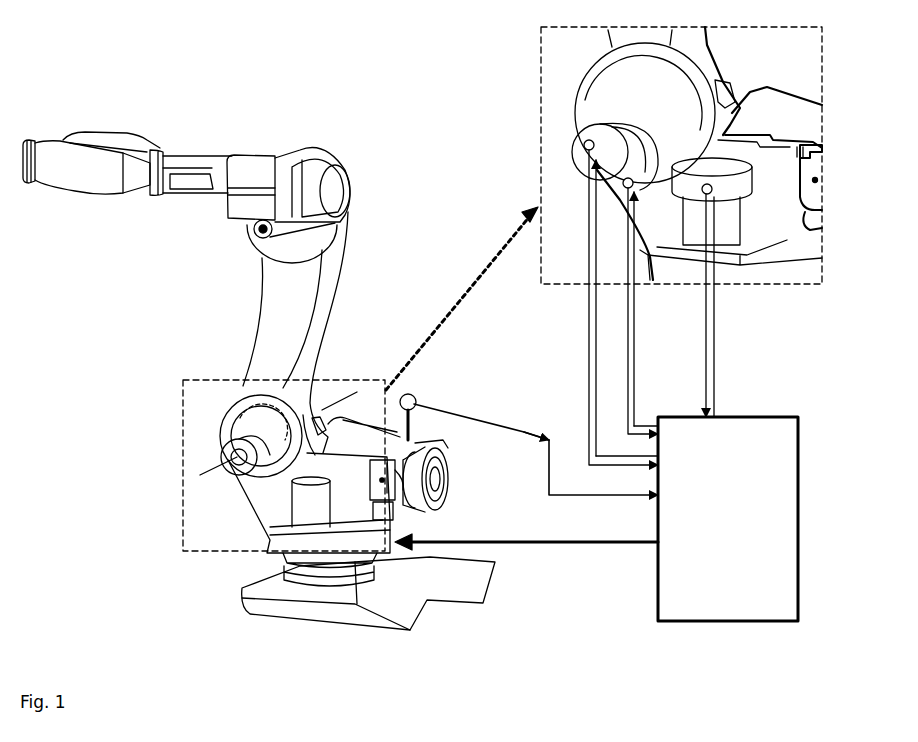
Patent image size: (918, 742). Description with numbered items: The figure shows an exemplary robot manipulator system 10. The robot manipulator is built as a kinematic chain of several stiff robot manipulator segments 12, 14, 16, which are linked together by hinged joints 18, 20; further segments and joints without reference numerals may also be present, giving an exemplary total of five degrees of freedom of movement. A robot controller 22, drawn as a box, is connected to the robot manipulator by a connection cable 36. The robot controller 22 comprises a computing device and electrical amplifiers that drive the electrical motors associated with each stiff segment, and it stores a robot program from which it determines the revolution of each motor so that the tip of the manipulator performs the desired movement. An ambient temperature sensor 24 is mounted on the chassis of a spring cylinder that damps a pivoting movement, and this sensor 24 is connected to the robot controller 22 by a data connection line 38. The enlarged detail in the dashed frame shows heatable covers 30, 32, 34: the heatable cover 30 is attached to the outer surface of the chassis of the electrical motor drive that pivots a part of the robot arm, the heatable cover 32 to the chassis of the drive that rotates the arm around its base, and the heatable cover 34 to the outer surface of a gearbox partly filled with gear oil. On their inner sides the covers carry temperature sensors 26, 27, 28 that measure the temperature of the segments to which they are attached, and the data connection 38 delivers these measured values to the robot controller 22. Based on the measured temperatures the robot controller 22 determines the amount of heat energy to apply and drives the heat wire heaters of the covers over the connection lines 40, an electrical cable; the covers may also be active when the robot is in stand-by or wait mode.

The robot manipulator system 10 is at (856, 635).
The stiff robot manipulator segment 12 is at (278, 497).
The stiff robot manipulator segment 14 is at (285, 288).
The stiff robot manipulator segment 16 is at (228, 192).
The hinged joint 18 is at (260, 433).
The hinged joint 20 is at (254, 233).
The robot controller 22 is at (676, 603).
The ambient temperature sensor 24 is at (415, 395).
The temperature sensor 26 is at (580, 144).
The temperature sensor 27 is at (673, 144).
The temperature sensor 28 is at (715, 187).
The heatable cover 30 is at (586, 127).
The heatable cover 32 is at (732, 191).
The heatable cover 34 is at (605, 88).
The connection cable 36 is at (572, 543).
The data connection line 38 is at (703, 340).
The connection lines 40 is at (598, 293).